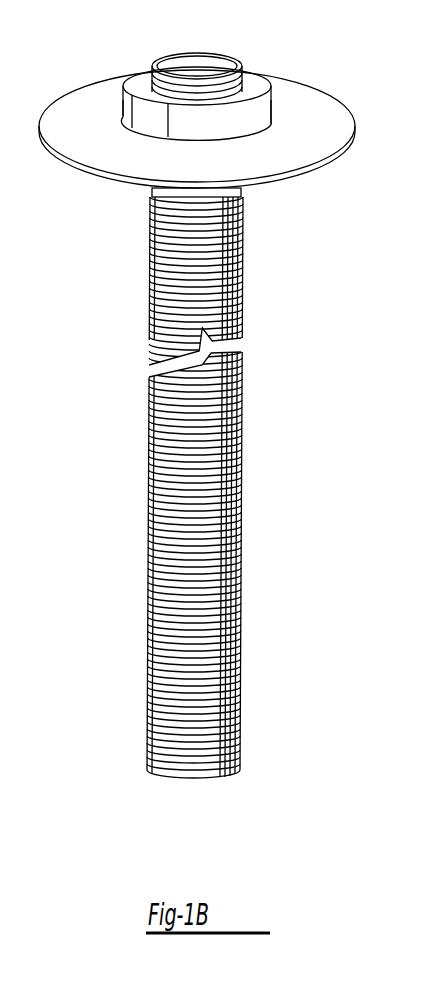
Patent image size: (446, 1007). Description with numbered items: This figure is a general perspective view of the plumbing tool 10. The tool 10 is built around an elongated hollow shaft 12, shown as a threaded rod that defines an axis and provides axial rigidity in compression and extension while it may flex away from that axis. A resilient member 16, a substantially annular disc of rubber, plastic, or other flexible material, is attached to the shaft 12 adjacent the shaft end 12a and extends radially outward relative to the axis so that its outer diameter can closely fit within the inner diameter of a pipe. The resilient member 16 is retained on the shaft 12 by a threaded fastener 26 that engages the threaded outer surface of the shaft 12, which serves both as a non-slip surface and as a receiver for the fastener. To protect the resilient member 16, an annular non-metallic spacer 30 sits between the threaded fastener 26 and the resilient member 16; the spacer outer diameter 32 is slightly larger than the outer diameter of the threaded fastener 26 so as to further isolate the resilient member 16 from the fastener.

The plumbing tool 10 is at (275, 411).
The elongated hollow shaft 12 is at (250, 277).
The shaft end 12a is at (214, 58).
The resilient member 16 is at (305, 157).
The threaded fastener 26 is at (266, 71).
The spacer 30 is at (280, 126).
The spacer outer diameter 32 is at (126, 119).